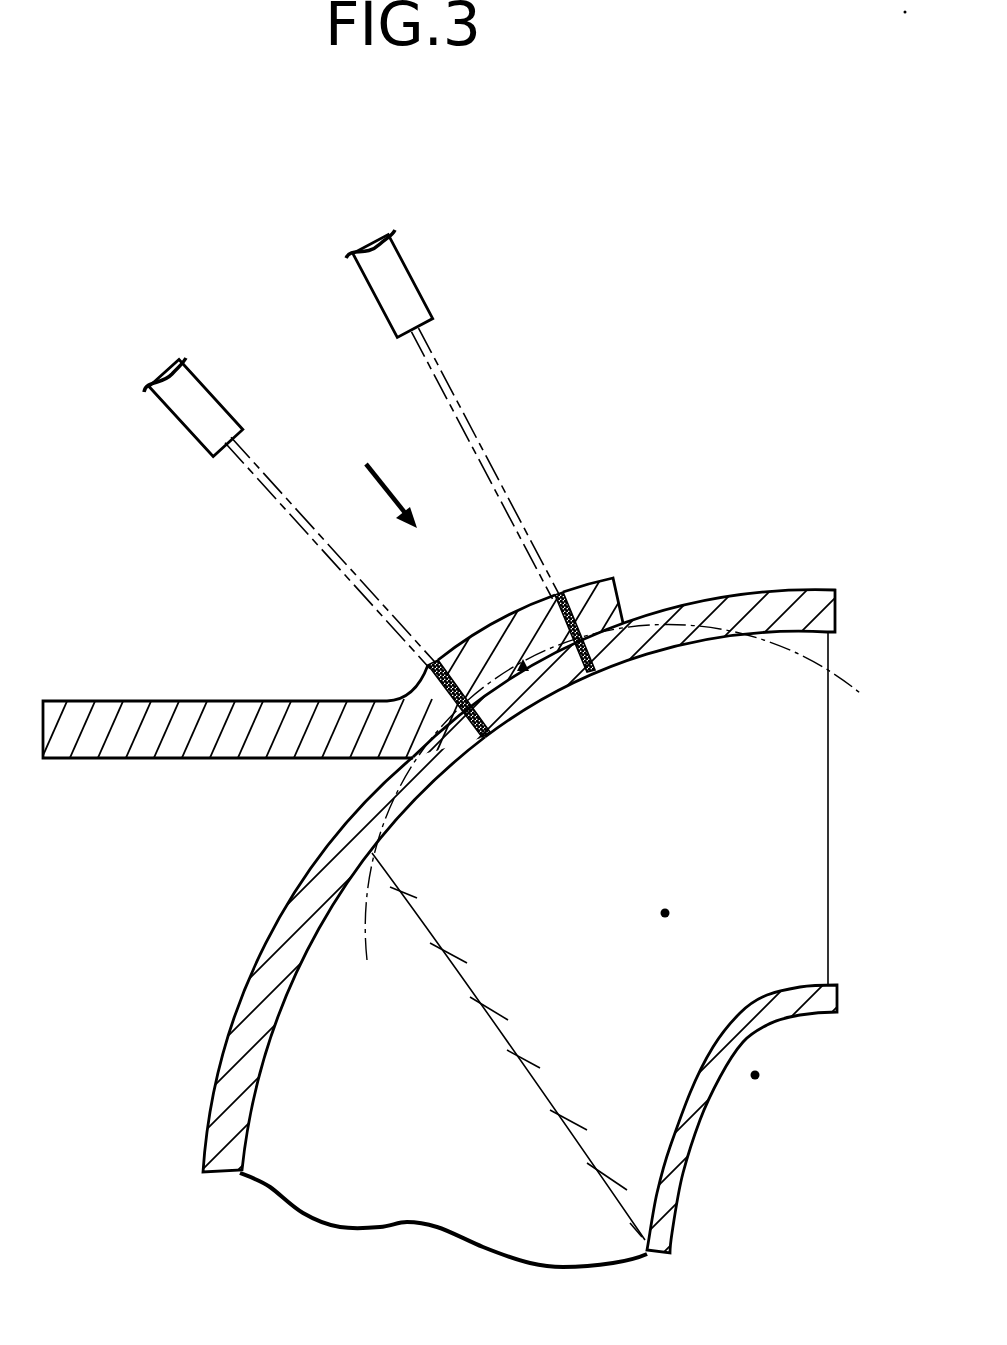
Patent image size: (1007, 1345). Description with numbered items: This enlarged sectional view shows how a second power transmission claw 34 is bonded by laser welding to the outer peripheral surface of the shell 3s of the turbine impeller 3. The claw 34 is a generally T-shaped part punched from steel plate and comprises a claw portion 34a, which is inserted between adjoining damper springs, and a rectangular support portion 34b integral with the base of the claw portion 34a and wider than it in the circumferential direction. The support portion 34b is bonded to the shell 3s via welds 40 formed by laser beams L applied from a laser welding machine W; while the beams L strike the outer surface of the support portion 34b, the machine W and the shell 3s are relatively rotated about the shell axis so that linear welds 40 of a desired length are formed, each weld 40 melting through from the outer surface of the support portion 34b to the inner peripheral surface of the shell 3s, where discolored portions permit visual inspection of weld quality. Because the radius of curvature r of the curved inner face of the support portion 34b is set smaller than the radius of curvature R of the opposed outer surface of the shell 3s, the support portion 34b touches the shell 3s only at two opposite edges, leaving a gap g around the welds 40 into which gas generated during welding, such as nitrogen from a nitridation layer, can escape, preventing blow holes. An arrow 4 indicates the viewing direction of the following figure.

The turbine impeller 3 is at (778, 588).
The shell 3s is at (245, 1017).
The arrow 4 is at (372, 467).
The second power transmission claw 34 is at (339, 651).
The claw portion 34a is at (270, 728).
The support portion 34b is at (490, 636).
The weld 40 is at (432, 665).
The laser welding machine W is at (410, 282).
The laser beam L is at (450, 382).
The gap g is at (540, 655).
The radius of curvature of the support portion inner peripheral surface r is at (523, 667).
The radius of curvature of the shell outer peripheral surface R is at (660, 632).